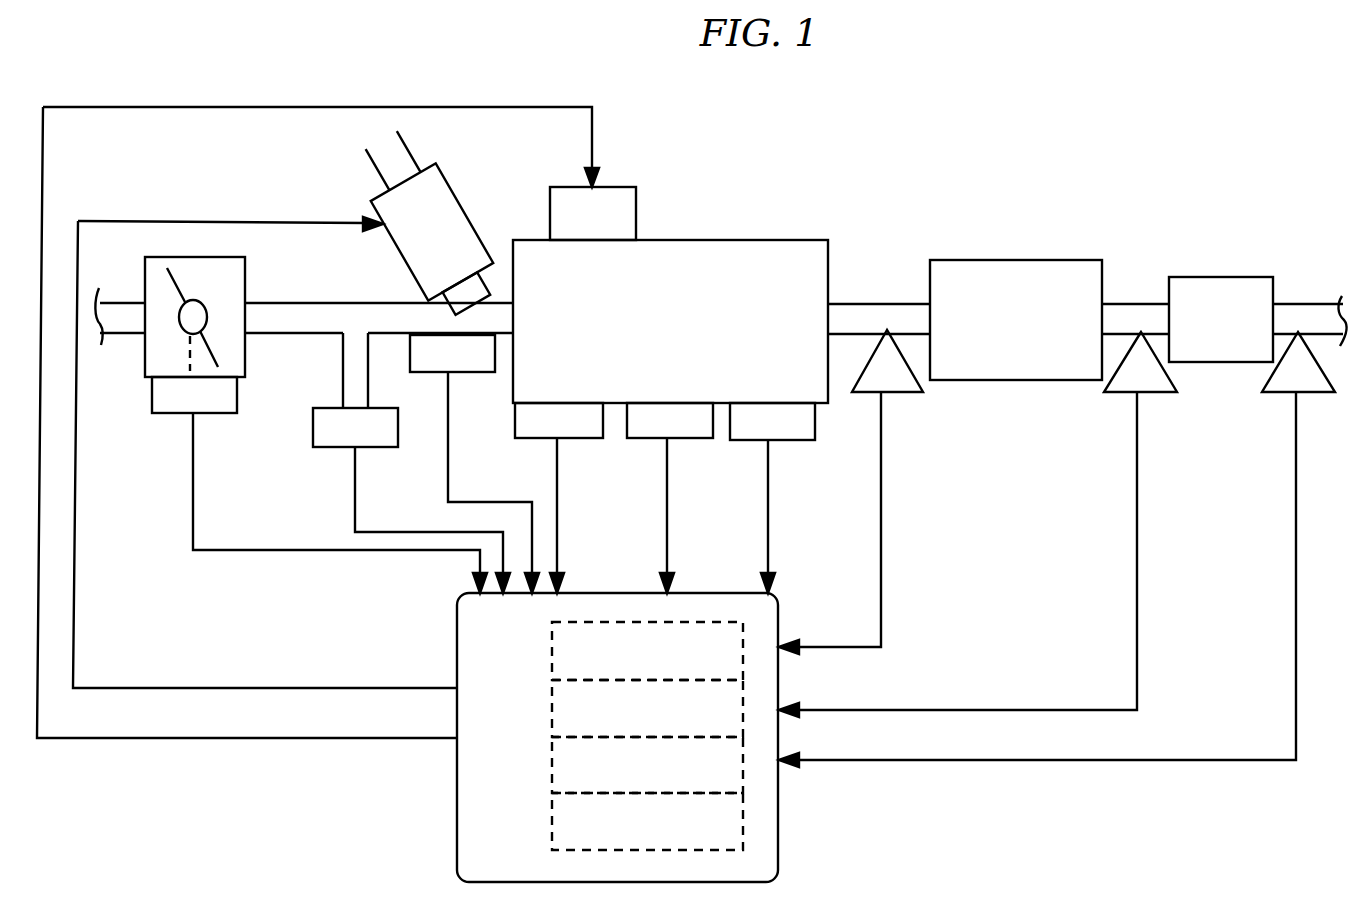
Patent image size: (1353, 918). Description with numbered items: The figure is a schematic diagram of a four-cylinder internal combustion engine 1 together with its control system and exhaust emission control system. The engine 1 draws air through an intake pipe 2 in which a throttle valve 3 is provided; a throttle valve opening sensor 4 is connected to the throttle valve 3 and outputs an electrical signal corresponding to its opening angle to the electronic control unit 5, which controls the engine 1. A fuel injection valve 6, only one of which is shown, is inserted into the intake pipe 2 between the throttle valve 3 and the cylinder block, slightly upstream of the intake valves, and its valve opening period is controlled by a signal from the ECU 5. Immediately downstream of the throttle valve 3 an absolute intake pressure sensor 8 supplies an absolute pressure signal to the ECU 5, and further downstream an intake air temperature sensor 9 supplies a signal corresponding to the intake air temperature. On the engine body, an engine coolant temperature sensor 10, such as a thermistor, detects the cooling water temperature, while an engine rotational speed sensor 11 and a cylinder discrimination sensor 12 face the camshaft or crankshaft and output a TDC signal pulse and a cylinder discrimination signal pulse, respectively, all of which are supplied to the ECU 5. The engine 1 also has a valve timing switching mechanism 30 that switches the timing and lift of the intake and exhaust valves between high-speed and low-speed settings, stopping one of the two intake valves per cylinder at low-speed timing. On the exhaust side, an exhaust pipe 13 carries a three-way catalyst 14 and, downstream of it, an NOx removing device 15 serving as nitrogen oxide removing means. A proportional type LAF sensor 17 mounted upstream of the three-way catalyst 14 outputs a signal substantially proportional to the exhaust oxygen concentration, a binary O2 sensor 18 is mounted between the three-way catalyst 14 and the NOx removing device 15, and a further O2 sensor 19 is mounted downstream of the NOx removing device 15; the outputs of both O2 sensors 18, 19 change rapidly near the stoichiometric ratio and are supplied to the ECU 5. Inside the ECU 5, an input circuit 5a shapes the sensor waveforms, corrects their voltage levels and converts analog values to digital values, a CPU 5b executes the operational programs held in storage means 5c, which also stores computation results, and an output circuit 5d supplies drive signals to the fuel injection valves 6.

The engine 1 is at (765, 240).
The intake pipe 2 is at (293, 303).
The throttle valve 3 is at (172, 282).
The throttle valve opening sensor 4 is at (225, 415).
The electronic control unit 5 is at (622, 593).
The input circuit 5a is at (722, 615).
The central processing unit 5b is at (752, 705).
The storage means 5c is at (748, 770).
The output circuit 5d is at (748, 825).
The fuel injection valve 6 is at (465, 208).
The absolute intake pressure sensor 8 is at (389, 447).
The intake air temperature sensor 9 is at (478, 372).
The engine coolant temperature sensor 10 is at (590, 438).
The engine rotational speed sensor 11 is at (693, 438).
The cylinder discrimination sensor 12 is at (797, 440).
The exhaust pipe 13 is at (899, 304).
The three-way catalyst 14 is at (983, 260).
The NOx removing device 15 is at (1223, 277).
The LAF sensor 17 is at (897, 392).
The O2 sensor 18 is at (1123, 395).
The O2 sensor 19 is at (1282, 395).
The valve timing switching mechanism 30 is at (615, 185).